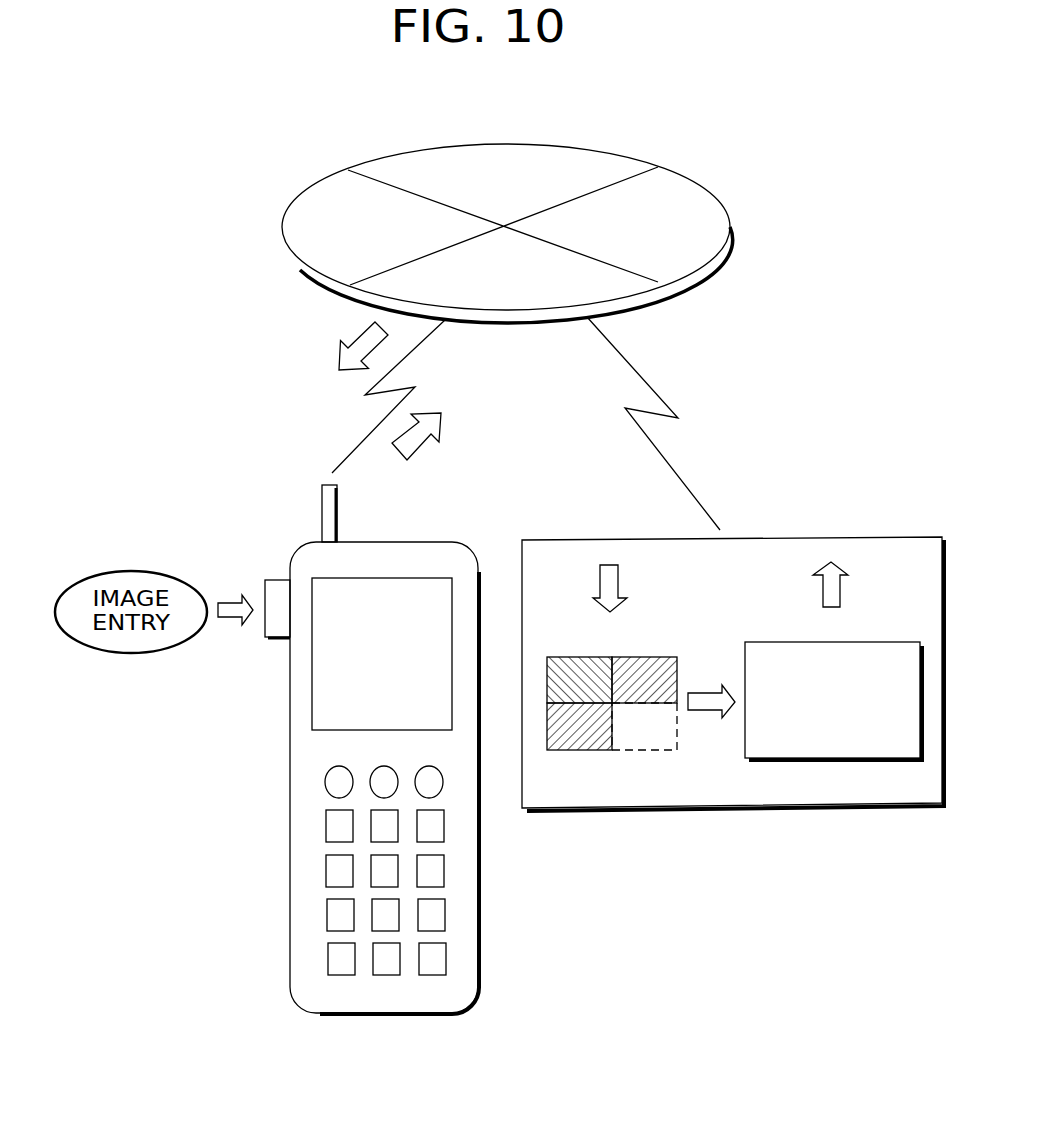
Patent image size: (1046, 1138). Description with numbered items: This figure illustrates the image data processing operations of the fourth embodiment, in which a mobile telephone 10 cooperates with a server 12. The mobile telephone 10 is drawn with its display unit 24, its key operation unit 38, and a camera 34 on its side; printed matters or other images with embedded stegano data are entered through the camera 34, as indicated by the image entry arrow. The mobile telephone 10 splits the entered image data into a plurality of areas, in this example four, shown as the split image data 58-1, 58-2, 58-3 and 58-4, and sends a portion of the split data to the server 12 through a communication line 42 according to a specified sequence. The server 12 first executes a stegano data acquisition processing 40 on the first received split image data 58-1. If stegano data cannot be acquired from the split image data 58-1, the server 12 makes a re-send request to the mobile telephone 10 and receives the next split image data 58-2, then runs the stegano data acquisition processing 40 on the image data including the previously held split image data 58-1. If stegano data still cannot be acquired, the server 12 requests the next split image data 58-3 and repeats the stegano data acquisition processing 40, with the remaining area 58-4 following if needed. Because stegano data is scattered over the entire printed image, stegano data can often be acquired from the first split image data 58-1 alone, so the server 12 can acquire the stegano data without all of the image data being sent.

The mobile telephone 10 is at (388, 1014).
The server 12 is at (733, 808).
The display unit 24 is at (348, 682).
The camera 34 is at (268, 580).
The key operation unit 38 is at (310, 875).
The stegano data acquisition processing 40 is at (880, 642).
The communication line 42 is at (504, 144).
The first split image data 58-1 is at (575, 658).
The second split image data 58-2 is at (576, 750).
The third split image data 58-3 is at (656, 658).
The fourth split image data 58-4 is at (657, 735).